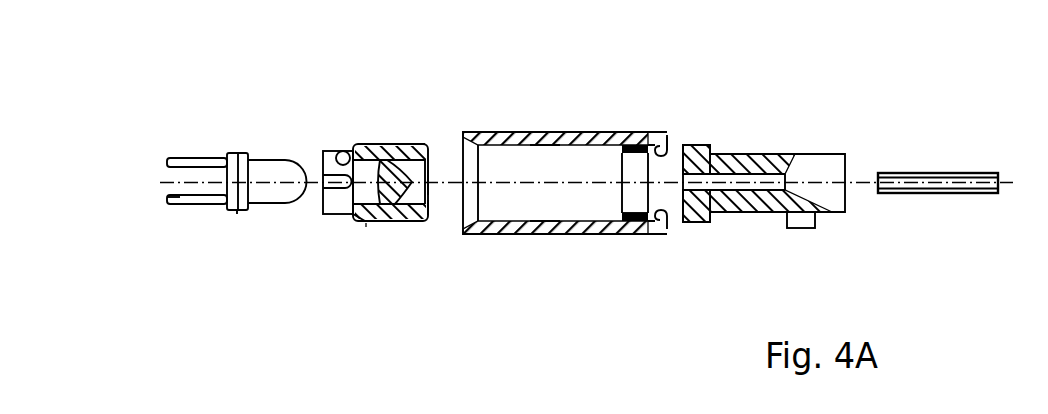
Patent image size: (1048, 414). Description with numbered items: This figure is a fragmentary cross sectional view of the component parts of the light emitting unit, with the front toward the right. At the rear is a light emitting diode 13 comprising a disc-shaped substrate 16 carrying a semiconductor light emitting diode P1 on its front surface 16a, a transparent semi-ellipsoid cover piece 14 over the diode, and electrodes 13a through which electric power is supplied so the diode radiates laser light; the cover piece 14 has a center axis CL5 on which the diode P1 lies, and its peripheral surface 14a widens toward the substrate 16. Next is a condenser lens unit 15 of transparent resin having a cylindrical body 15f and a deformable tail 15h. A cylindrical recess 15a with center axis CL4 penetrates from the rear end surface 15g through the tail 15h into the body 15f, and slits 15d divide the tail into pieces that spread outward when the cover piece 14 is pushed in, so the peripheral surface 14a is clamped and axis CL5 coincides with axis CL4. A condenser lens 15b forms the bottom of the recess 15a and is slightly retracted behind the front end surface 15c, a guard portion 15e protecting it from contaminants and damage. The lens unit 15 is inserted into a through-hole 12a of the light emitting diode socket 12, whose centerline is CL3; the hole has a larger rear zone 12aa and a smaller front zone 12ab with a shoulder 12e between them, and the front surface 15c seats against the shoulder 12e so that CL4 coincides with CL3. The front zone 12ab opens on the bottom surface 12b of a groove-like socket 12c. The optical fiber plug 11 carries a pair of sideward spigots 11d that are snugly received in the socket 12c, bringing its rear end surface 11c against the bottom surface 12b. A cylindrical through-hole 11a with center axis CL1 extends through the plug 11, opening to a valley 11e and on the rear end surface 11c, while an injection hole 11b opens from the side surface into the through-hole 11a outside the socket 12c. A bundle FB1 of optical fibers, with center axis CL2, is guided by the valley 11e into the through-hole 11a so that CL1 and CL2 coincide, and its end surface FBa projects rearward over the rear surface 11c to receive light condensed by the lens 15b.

The optical fiber plug 11 is at (762, 219).
The cylindrical through-hole 11a is at (760, 180).
The injection hole 11b is at (748, 154).
The rear end surface 11c is at (678, 212).
The spigot 11d is at (695, 150).
The valley 11e is at (822, 172).
The light emitting diode socket 12 is at (510, 239).
The through-hole 12a is at (541, 163).
The rear zone 12aa is at (542, 218).
The front zone 12ab is at (634, 222).
The bottom surface 12b is at (675, 152).
The socket 12c is at (658, 150).
The shoulder 12e is at (602, 236).
The light emitting diode 13 is at (228, 210).
The electrode 13a is at (173, 204).
The semi-ellipsoid cover piece 14 is at (283, 203).
The peripheral surface 14a is at (258, 158).
The condenser lens unit 15 is at (343, 198).
The cylindrical recess 15a is at (340, 152).
The condenser lens 15b is at (428, 183).
The front end surface 15c is at (427, 216).
The slit 15d is at (324, 178).
The guard portion 15e is at (428, 147).
The cylindrical body 15f is at (372, 214).
The rear end surface 15g is at (337, 152).
The deformable tail 15h is at (362, 226).
The disc-shaped substrate 16 is at (237, 153).
The front surface 16a is at (253, 155).
The semiconductor light emitting diode P1 is at (238, 218).
The bundle of optical fibers FB1 is at (940, 196).
The end surface FBa is at (878, 190).
The center axis of cylindrical through-hole CL1 is at (850, 182).
The center axis of bundle CL2 is at (1003, 182).
The centerline of through-hole CL3 is at (585, 183).
The center axis of cylindrical recess CL4 is at (366, 228).
The center axis of semi-ellipsoid cover piece CL5 is at (150, 179).